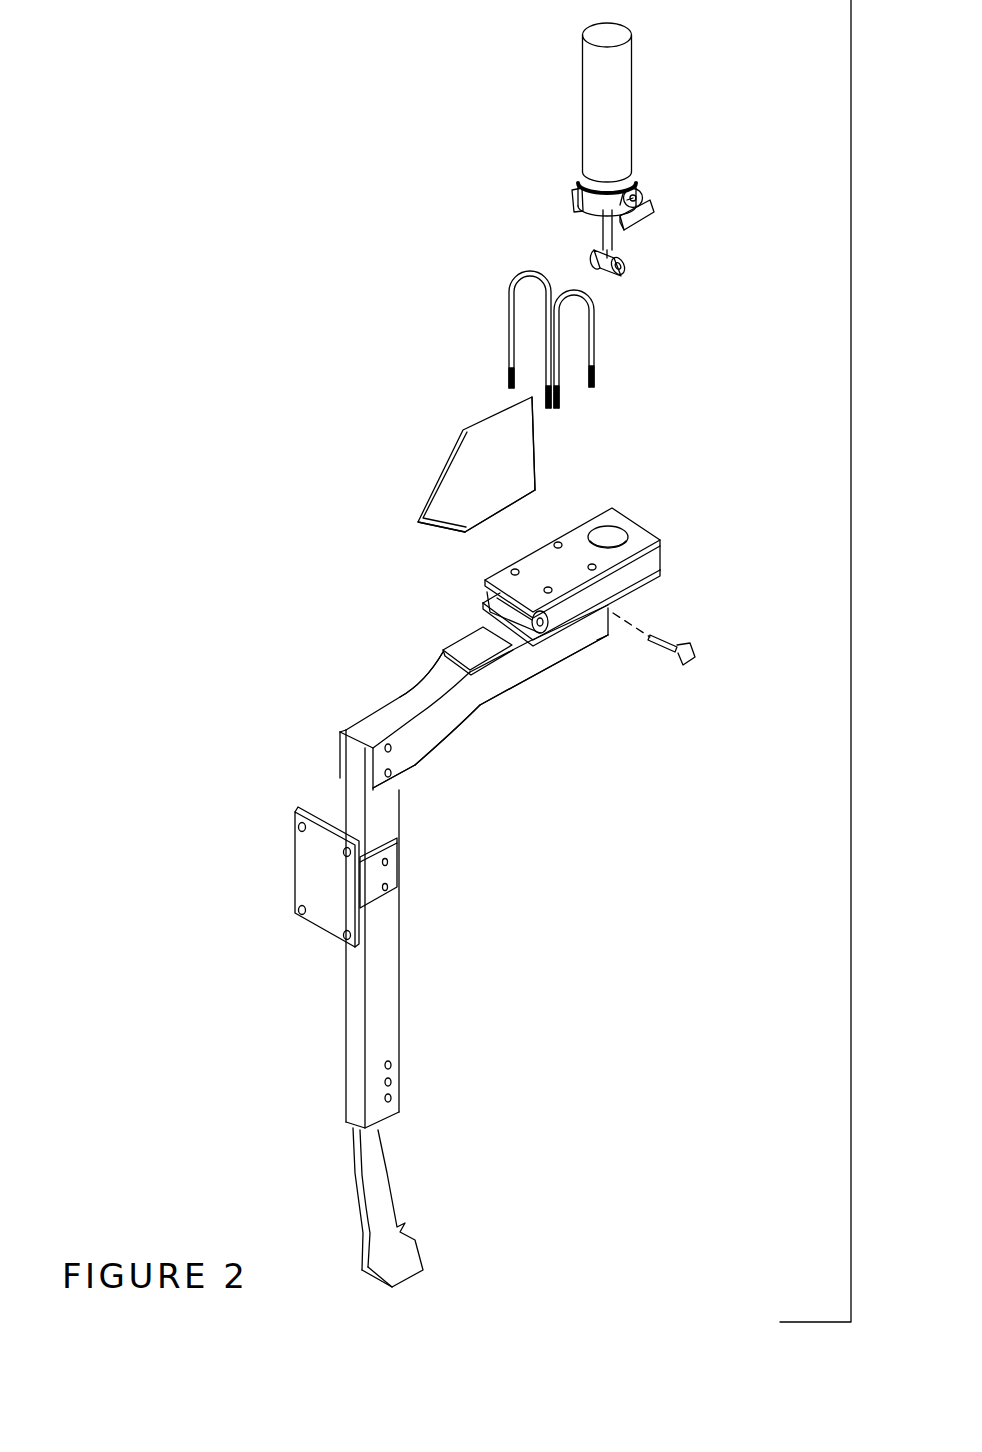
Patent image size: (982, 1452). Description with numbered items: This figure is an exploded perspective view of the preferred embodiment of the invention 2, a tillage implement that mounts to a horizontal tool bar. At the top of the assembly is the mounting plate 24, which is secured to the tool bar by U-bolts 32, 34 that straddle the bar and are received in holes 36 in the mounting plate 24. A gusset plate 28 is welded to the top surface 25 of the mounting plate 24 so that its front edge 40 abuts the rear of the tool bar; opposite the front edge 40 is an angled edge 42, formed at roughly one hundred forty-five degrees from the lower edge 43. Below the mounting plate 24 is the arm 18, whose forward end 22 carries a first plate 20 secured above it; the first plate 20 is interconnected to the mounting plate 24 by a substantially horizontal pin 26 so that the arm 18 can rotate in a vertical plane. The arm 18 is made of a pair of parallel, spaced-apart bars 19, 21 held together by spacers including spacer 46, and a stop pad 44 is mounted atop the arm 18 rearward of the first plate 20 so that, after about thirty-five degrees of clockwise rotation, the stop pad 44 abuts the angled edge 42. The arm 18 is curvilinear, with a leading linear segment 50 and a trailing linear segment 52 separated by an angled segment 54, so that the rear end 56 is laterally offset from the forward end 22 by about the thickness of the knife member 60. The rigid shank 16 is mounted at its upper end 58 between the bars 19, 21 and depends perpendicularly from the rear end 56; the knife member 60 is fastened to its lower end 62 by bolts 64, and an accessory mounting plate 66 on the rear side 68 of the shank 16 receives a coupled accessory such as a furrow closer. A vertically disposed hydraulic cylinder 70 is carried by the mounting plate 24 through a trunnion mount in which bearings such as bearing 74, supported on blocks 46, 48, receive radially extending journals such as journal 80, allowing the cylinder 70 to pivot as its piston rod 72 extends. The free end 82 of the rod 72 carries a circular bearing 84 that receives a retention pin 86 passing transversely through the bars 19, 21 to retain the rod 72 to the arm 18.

The invention 2 is at (851, 932).
The shank 16 is at (421, 929).
The arm 18 is at (487, 696).
The bar 19 is at (374, 671).
The first plate 20 is at (626, 589).
The bar 21 is at (544, 718).
The forward end 22 is at (678, 579).
The mounting plate 24 is at (626, 548).
The top surface 25 is at (619, 504).
The pin 26 is at (475, 607).
The gusset plate 28 is at (417, 464).
The U-bolt 32 is at (542, 315).
The U-bolt 34 is at (490, 328).
The holes 36 is at (585, 568).
The front edge 40 is at (607, 432).
The angled edge 42 is at (416, 541).
The lower edge 43 is at (470, 537).
The stop pad 44 is at (426, 643).
The spacer 46 is at (451, 416).
The block 48 is at (683, 201).
The leading linear segment 50 is at (677, 661).
The trailing linear segment 52 is at (440, 816).
The angled segment 54 is at (479, 772).
The rear end 56 is at (325, 774).
The upper end 58 is at (301, 751).
The knife member 60 is at (437, 1207).
The lower end 62 is at (417, 1142).
The bolts 64 is at (434, 1086).
The accessory mounting plate 66 is at (291, 904).
The rear side 68 is at (324, 952).
The hydraulic cylinder 70 is at (655, 97).
The piston rod 72 is at (656, 268).
The bearing 74 is at (677, 143).
The journal 80 is at (683, 172).
The free end 82 is at (541, 205).
The circular bearing 84 is at (538, 225).
The retention pin 86 is at (710, 639).